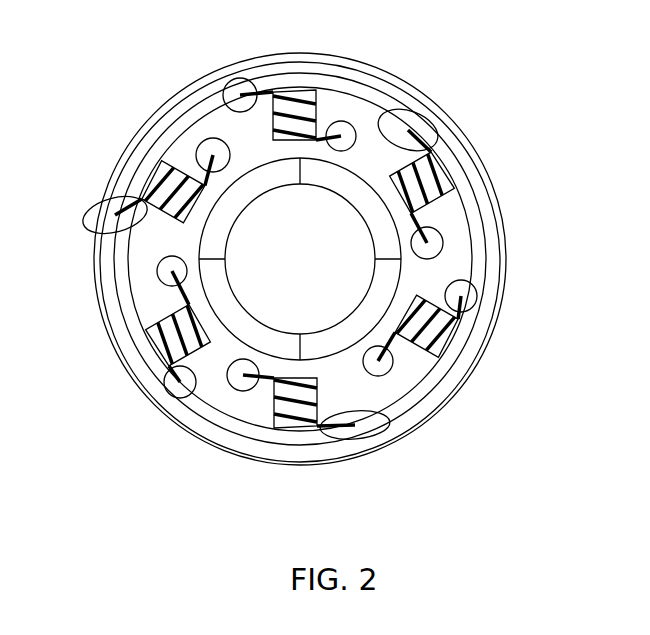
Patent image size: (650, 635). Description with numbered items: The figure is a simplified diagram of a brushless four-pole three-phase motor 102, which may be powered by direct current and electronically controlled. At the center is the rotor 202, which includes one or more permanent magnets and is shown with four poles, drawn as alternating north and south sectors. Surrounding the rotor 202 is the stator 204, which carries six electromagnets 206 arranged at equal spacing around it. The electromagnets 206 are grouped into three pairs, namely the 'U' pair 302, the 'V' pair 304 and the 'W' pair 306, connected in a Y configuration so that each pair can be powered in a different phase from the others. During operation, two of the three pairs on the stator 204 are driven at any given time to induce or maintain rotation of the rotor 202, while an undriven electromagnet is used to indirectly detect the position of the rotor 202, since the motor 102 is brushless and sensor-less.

The brushless four-pole three-phase motor 102 is at (493, 80).
The rotor 202 is at (338, 340).
The stator 204 is at (474, 263).
The electromagnets 206 is at (311, 90).
The 'U' pair of electromagnets 302 is at (244, 78).
The 'V' pair of electromagnets 304 is at (176, 396).
The 'W' pair of electromagnets 306 is at (200, 142).